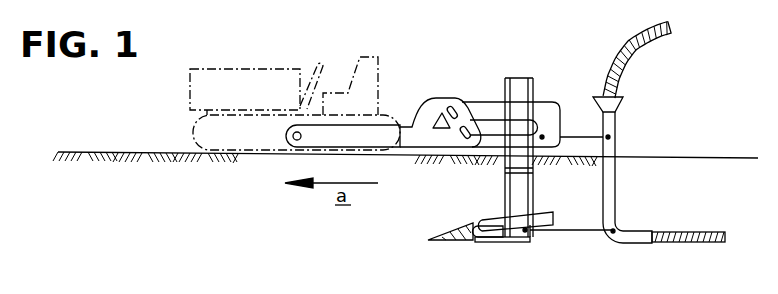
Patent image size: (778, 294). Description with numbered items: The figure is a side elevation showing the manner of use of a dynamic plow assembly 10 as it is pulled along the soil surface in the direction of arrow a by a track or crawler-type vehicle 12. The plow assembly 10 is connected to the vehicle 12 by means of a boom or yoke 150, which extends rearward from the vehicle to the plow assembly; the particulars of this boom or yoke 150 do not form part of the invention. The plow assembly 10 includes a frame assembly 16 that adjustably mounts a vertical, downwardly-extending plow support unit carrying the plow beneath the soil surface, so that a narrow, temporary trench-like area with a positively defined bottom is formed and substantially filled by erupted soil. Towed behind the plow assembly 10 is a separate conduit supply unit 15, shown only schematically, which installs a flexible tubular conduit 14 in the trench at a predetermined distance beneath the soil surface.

The dynamic plow assembly 10 is at (525, 68).
The track or crawler-type vehicle 12 is at (248, 74).
The flexible tubular conduit 14 is at (651, 57).
The conduit supply unit 15 is at (629, 133).
The frame assembly 16 is at (560, 95).
The boom or yoke 150 is at (383, 146).